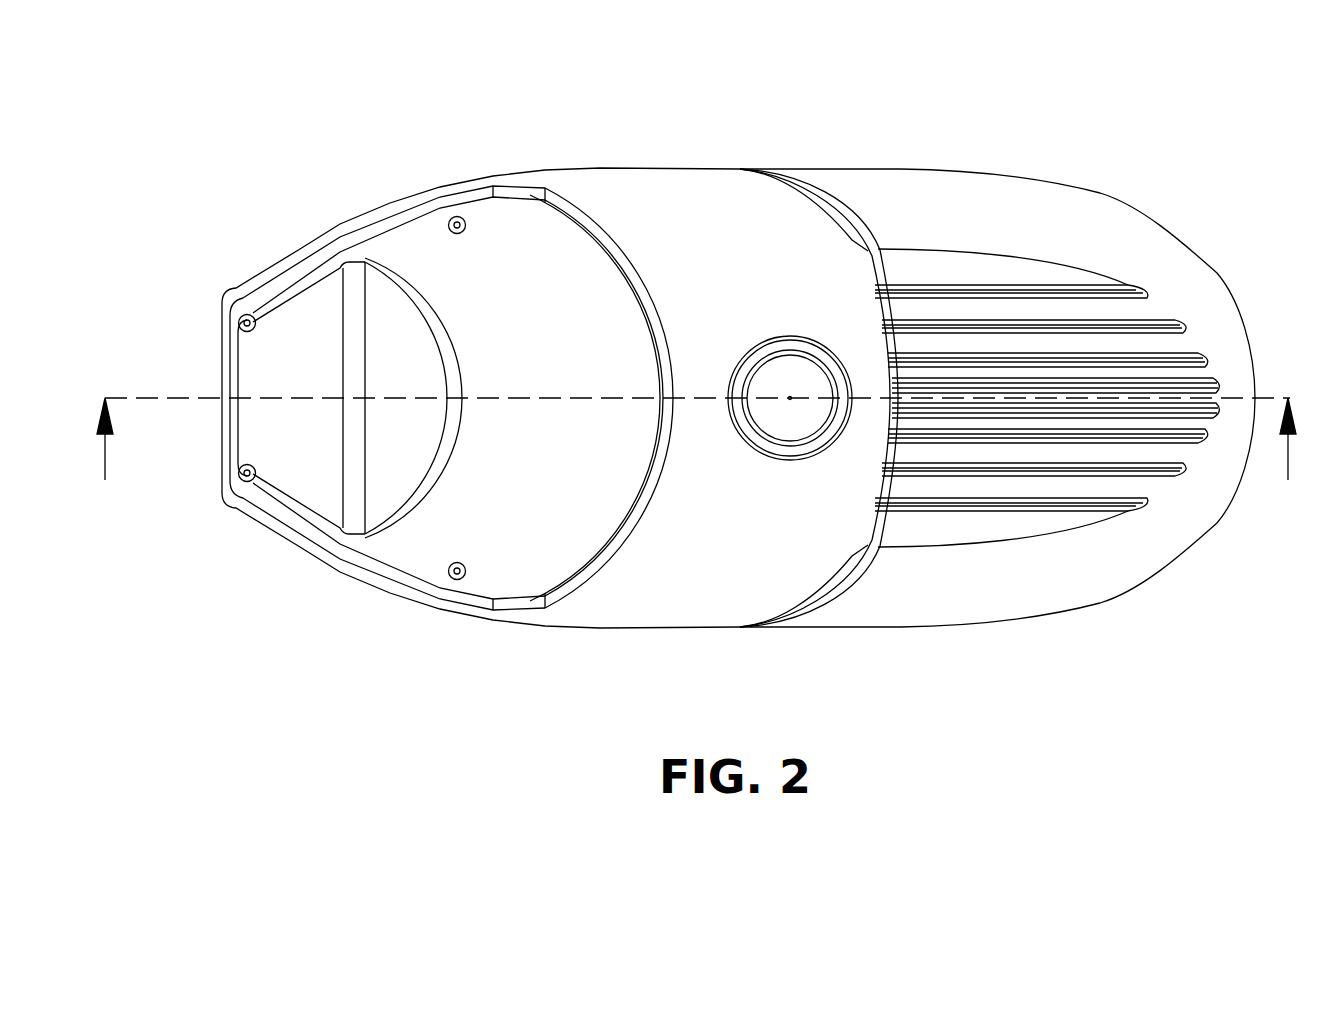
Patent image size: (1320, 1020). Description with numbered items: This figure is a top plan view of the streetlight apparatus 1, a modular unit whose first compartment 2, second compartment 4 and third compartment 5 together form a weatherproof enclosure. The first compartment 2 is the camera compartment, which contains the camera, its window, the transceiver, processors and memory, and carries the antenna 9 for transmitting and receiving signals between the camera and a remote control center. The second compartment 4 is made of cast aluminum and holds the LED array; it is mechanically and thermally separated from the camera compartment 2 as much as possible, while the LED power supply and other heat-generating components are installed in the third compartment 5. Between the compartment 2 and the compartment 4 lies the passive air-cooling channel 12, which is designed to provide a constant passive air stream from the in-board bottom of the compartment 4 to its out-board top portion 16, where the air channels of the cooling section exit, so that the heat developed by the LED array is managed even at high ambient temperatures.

The streetlight apparatus 1 is at (708, 357).
The first compartment 2 is at (622, 183).
The second compartment 4 is at (1167, 238).
The third compartment 5 is at (430, 257).
The antenna 9 is at (772, 383).
The passive air-cooling channel 12 is at (852, 240).
The top portion of the passive air cooling section 16 is at (1110, 512).